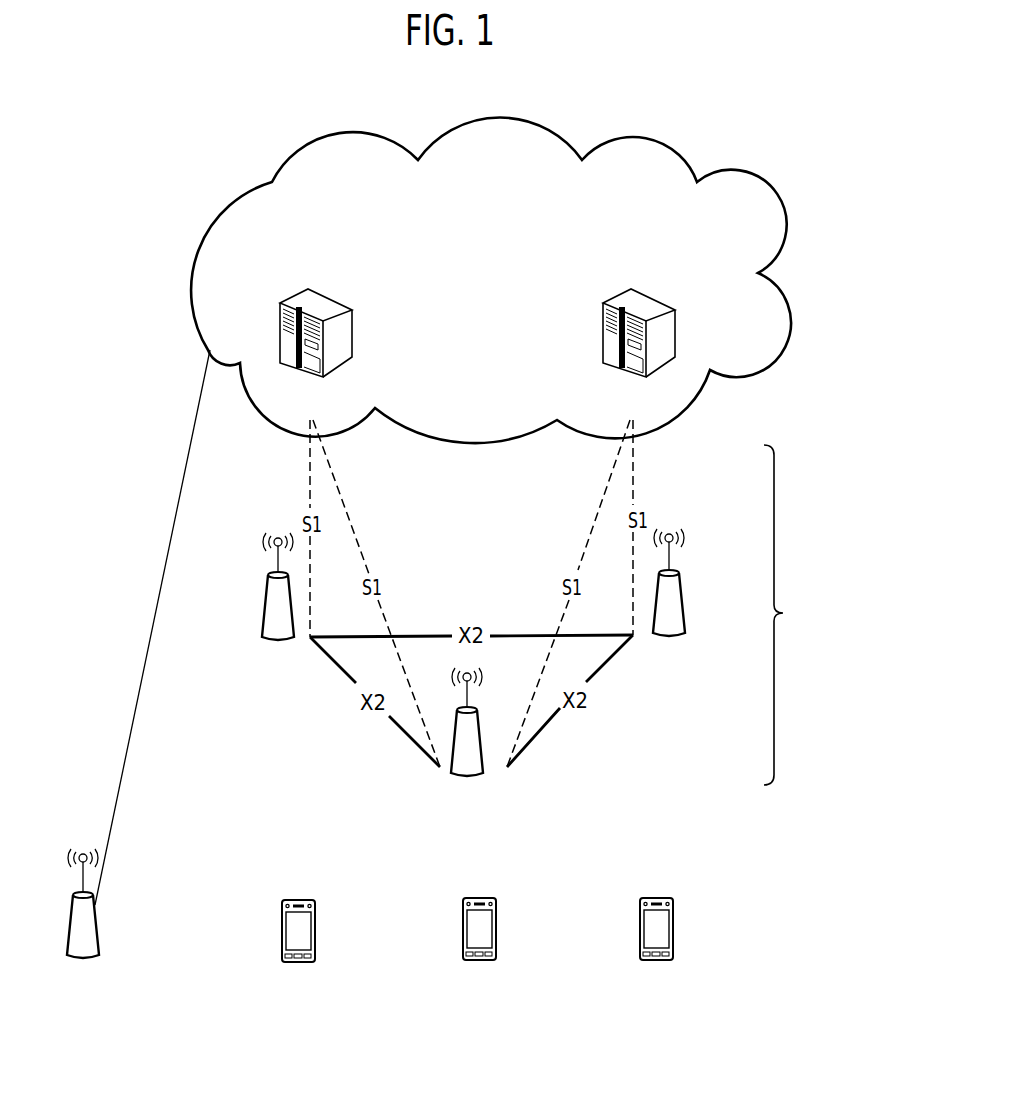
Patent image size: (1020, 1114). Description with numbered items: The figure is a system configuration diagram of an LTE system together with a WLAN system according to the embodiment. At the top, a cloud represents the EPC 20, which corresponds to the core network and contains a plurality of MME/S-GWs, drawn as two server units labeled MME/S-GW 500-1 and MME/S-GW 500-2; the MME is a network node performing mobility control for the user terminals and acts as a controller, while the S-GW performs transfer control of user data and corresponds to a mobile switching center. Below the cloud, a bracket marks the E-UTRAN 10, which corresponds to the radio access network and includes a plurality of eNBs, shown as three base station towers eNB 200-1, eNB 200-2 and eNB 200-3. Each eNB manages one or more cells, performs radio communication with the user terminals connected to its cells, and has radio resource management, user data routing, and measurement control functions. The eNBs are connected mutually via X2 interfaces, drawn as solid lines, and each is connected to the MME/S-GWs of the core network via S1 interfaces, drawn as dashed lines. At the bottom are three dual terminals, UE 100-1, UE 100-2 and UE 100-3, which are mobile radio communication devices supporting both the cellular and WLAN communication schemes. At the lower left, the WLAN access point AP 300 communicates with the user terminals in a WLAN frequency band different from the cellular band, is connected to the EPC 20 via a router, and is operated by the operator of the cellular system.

The E-UTRAN 10 is at (820, 615).
The EPC 20 is at (673, 150).
The UE 100-1 is at (302, 899).
The UE 100-2 is at (484, 897).
The UE 100-3 is at (661, 897).
The eNB 200-1 is at (265, 611).
The eNB 200-2 is at (483, 750).
The eNB 200-3 is at (680, 582).
The AP 300 is at (99, 930).
The MME/S-GW 500-1 is at (337, 301).
The MME/S-GW 500-2 is at (644, 301).